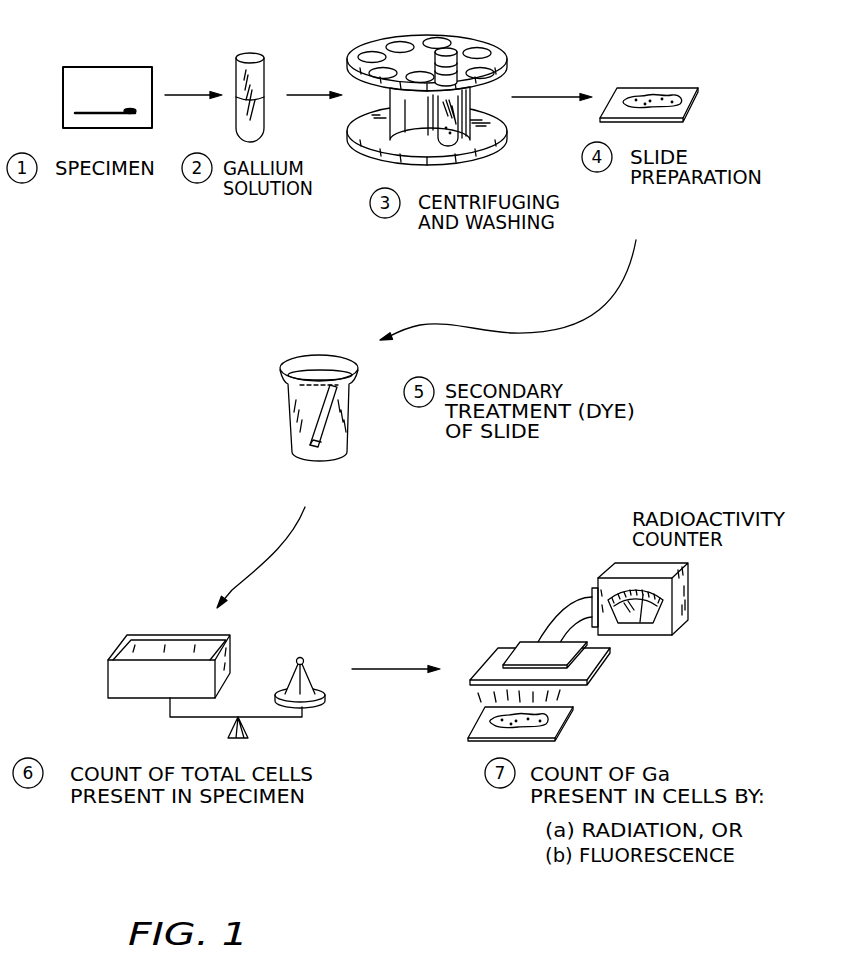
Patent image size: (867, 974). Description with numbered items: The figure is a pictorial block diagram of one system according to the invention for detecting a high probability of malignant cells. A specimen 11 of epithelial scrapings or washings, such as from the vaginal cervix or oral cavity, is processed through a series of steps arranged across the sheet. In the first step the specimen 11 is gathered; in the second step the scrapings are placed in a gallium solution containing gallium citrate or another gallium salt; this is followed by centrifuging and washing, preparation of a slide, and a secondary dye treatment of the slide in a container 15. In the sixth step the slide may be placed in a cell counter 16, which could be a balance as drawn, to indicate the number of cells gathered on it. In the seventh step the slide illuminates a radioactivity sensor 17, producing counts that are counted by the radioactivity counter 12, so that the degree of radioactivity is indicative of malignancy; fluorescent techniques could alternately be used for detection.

The specimen 11 is at (128, 109).
The radioactivity counter 12 is at (658, 627).
The dye container 15 is at (343, 418).
The cell counter 16 is at (222, 660).
The radioactivity sensor 17 is at (493, 660).